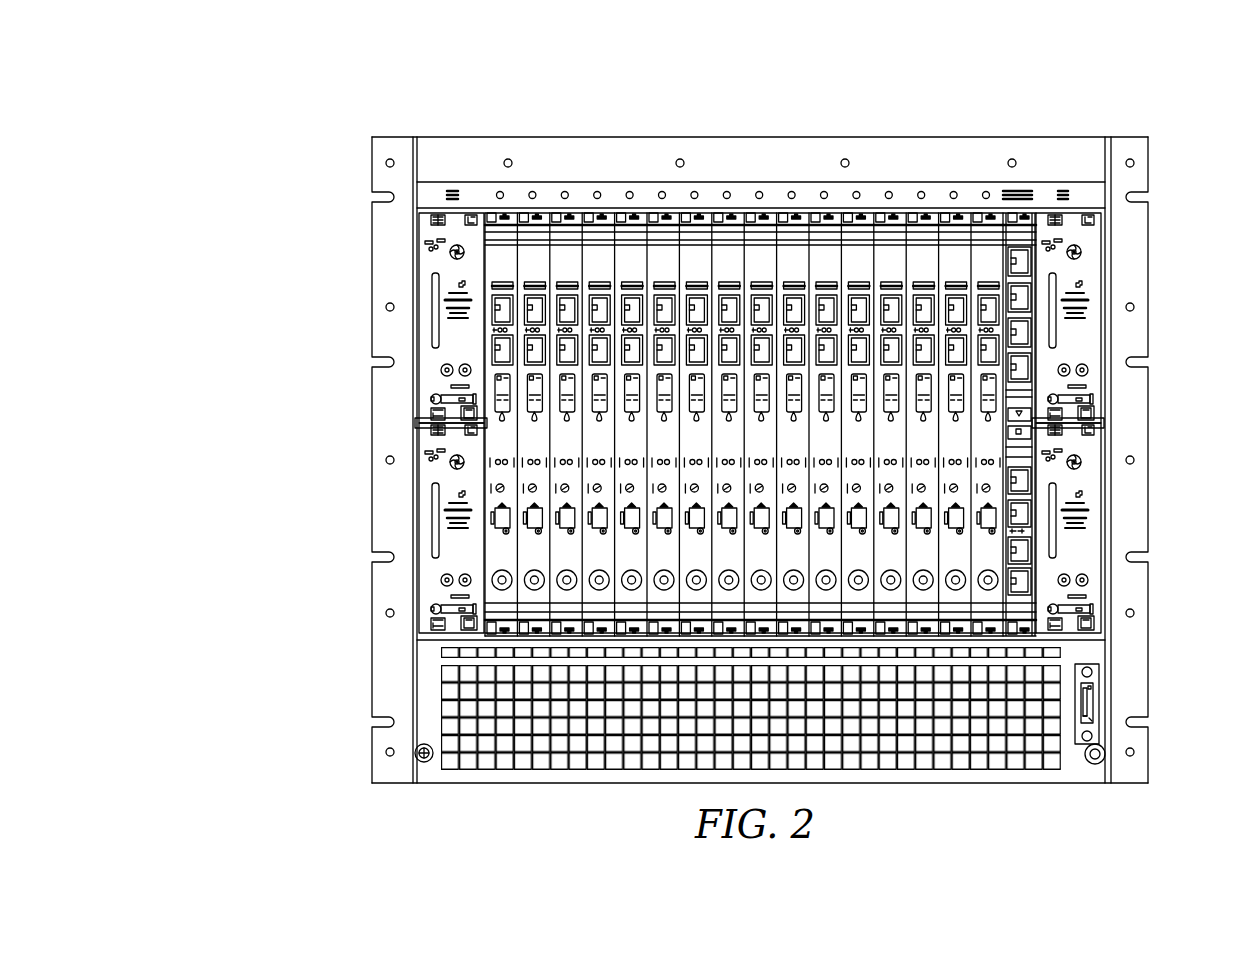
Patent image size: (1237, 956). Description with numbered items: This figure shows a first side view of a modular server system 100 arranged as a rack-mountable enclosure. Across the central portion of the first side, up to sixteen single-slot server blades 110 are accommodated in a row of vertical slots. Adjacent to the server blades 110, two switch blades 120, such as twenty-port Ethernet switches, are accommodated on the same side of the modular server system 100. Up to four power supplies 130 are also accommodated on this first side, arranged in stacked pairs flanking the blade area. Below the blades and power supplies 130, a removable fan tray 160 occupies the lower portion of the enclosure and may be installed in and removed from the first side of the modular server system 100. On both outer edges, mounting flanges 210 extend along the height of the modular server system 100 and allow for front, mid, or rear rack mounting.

The modular server system 100 is at (1176, 101).
The server blades 110 is at (662, 258).
The switch blades 120 is at (1018, 257).
The power supplies 130 is at (376, 101).
The removable fan tray 160 is at (432, 694).
The mounting flanges 210 is at (390, 270).